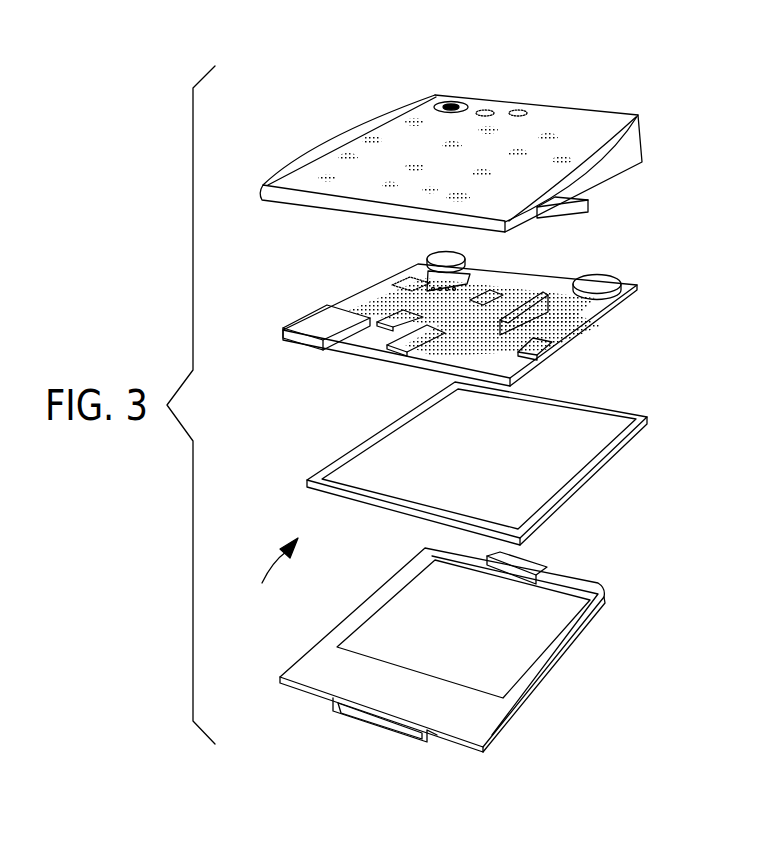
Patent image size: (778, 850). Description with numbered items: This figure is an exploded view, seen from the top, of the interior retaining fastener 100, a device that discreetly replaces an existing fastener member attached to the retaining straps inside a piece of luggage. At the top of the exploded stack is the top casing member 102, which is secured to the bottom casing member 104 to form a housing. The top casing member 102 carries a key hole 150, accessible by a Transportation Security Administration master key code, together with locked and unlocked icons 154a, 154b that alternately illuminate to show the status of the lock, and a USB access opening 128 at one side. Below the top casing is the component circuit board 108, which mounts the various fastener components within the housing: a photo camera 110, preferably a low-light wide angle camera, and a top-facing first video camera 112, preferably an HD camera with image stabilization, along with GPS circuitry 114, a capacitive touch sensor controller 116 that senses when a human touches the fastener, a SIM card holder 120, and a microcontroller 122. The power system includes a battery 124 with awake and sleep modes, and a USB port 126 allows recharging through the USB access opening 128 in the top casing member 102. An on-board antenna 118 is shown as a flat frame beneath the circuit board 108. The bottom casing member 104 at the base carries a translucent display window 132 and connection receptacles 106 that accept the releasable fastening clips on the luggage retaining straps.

The interior retaining fastener 100 is at (264, 575).
The top casing member 102 is at (642, 140).
The bottom casing member 104 is at (477, 720).
The connection receptacles 106 is at (527, 558).
The component circuit board 108 is at (583, 310).
The photo camera 110 is at (612, 275).
The top-facing first video camera 112 is at (433, 252).
The GPS circuitry 114 is at (377, 352).
The capacitive touch sensor controller 116 is at (507, 263).
The on-board antenna 118 is at (615, 448).
The SIM card holder 120 is at (307, 307).
The microcontroller 122 is at (387, 283).
The battery 124 is at (312, 328).
The USB port 126 is at (550, 352).
The USB access opening 128 is at (590, 204).
The translucent display window 132 is at (508, 642).
The key hole 150 is at (451, 102).
The locked icon 154a is at (518, 110).
The unlocked icon 154b is at (486, 110).